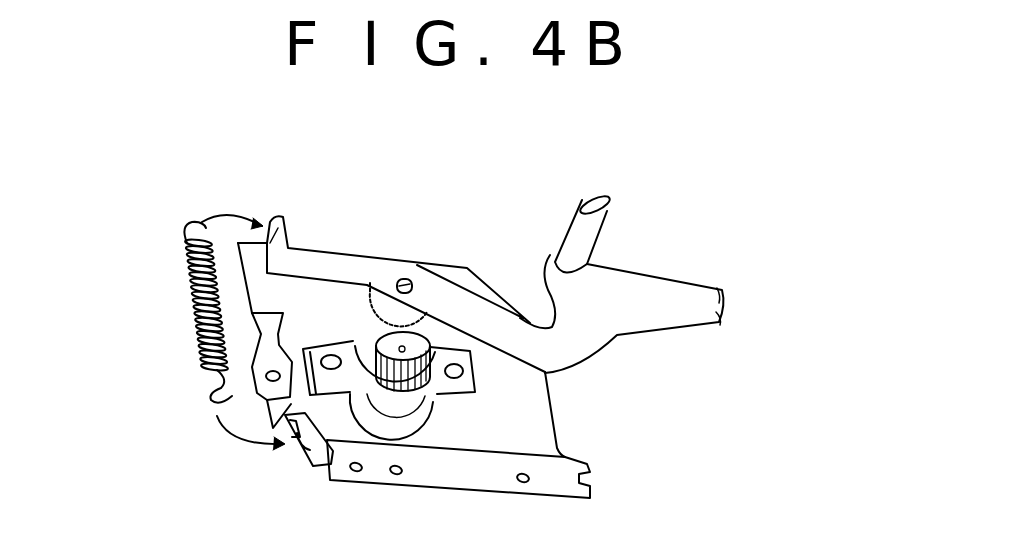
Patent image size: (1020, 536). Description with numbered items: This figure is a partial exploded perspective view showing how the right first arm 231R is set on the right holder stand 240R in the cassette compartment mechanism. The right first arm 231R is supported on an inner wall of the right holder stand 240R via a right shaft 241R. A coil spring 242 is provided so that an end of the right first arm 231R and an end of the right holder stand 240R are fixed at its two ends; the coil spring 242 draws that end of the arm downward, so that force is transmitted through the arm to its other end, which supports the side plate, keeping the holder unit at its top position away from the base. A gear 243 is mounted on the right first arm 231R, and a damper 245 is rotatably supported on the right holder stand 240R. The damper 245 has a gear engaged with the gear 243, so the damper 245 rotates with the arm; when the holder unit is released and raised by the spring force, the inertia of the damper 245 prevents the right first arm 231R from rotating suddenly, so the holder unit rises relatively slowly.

The right first arm 231R is at (617, 296).
The right holder stand 240R is at (520, 386).
The right shaft 241R is at (405, 278).
The coil spring 242 is at (196, 338).
The gear 243 is at (370, 290).
The damper 245 is at (591, 468).